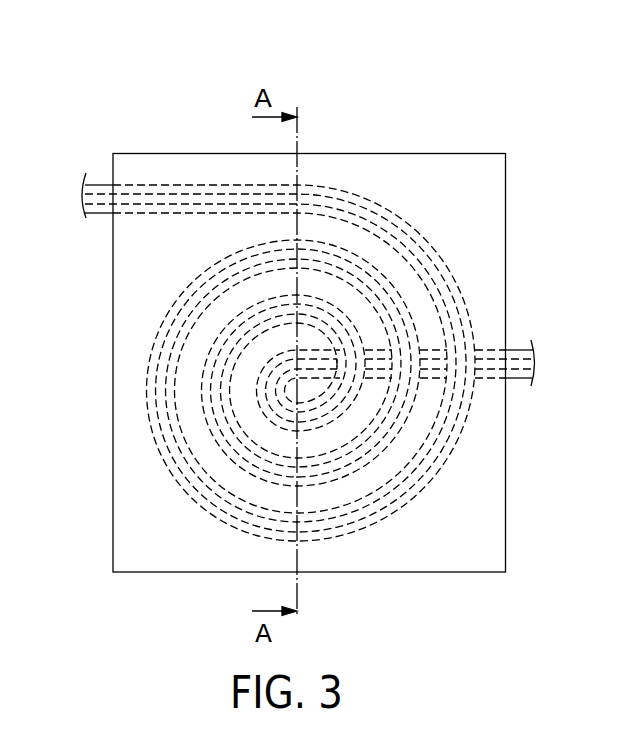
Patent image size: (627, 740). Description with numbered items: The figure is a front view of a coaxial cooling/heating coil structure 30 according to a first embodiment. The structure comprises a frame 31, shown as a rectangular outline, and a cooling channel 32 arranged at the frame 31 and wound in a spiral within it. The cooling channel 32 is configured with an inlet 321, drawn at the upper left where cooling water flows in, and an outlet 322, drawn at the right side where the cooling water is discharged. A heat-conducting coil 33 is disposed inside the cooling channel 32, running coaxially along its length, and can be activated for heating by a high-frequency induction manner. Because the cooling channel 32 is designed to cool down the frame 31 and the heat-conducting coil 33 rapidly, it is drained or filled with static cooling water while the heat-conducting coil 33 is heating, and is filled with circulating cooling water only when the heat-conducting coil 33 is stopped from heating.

The coaxial cooling/heating coil structure 30 is at (308, 58).
The frame 31 is at (432, 155).
The cooling channel 32 is at (132, 187).
The heat-conducting coil 33 is at (183, 197).
The inlet 321 is at (79, 197).
The outlet 322 is at (538, 361).